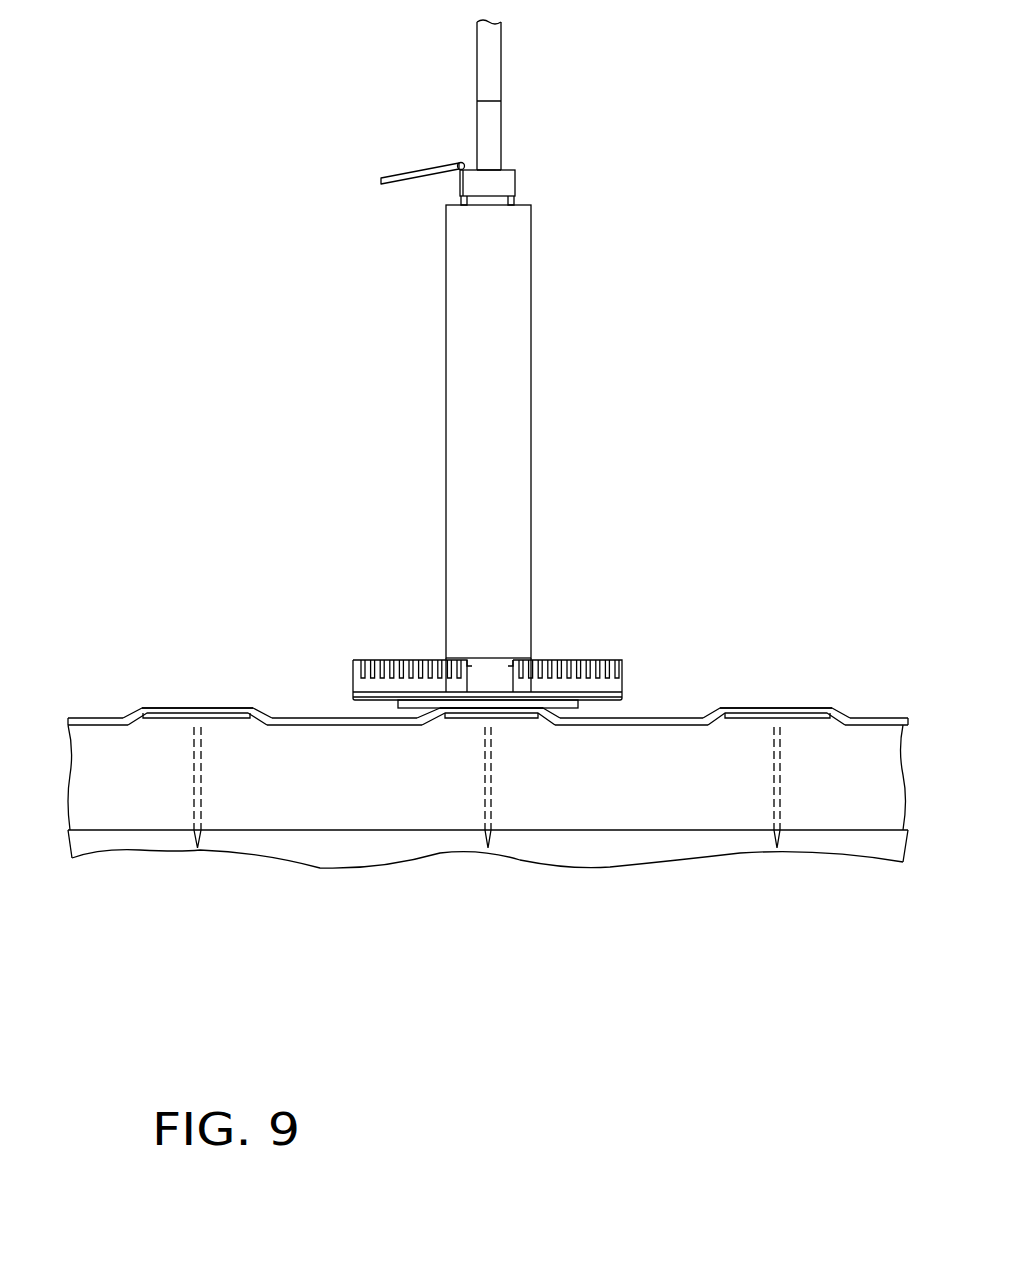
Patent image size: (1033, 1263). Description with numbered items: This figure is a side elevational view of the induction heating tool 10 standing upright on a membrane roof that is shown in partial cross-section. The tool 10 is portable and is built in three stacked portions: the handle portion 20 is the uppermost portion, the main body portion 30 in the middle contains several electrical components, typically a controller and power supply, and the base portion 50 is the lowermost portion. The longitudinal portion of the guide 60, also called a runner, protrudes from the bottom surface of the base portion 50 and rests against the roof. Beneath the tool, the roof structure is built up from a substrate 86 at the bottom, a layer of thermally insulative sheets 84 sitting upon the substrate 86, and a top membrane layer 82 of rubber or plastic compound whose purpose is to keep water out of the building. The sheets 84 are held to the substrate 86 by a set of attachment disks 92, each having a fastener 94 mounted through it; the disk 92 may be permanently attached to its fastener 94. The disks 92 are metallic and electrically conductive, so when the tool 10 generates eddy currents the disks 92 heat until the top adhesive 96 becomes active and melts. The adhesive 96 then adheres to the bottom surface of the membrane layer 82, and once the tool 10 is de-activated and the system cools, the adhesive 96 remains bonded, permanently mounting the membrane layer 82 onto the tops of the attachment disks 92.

The induction heating tool 10 is at (682, 72).
The handle portion 20 is at (443, 82).
The main body portion 30 is at (542, 383).
The base portion 50 is at (600, 650).
The guide 60 is at (577, 705).
The top membrane layer 82 is at (94, 717).
The thermally insulative sheets 84 is at (343, 794).
The substrate 86 is at (325, 861).
The attachment disk 92 is at (233, 728).
The fastener 94 is at (194, 785).
The top adhesive 96 is at (240, 710).